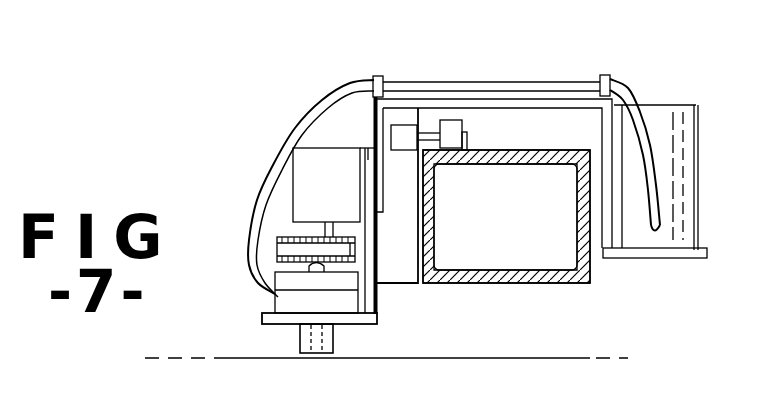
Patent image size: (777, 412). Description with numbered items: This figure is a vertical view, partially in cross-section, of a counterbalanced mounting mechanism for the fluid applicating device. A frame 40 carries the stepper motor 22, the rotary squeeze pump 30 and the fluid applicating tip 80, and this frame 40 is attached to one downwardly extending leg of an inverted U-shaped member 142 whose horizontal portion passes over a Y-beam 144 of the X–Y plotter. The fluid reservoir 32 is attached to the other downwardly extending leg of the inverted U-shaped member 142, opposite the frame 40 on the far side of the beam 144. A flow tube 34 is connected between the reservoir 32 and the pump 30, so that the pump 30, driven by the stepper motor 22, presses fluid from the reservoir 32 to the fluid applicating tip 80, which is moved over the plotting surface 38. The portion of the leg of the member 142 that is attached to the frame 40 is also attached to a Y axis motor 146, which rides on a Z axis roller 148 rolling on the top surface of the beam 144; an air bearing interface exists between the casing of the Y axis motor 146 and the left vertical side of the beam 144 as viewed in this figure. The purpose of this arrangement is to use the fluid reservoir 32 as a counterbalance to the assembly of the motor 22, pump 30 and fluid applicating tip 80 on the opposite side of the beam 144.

The stepper motor 22 is at (337, 192).
The rotary squeeze pump 30 is at (276, 301).
The fluid reservoir 32 is at (697, 137).
The flow tube 34 is at (499, 88).
The plotting surface 38 is at (217, 357).
The frame 40 is at (368, 147).
The fluid applicating tip 80 is at (300, 353).
The inverted U-shaped member 142 is at (561, 101).
The Y-beam 144 is at (575, 283).
The Y axis motor 146 is at (413, 282).
The Z axis roller 148 is at (464, 129).